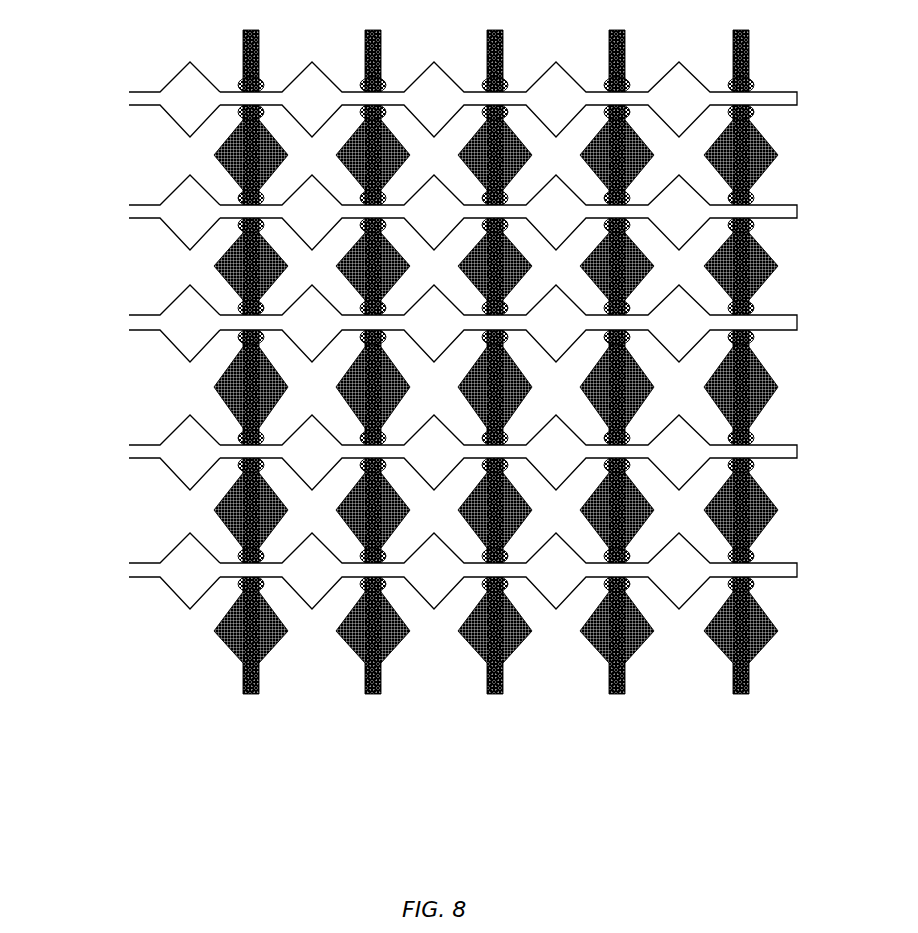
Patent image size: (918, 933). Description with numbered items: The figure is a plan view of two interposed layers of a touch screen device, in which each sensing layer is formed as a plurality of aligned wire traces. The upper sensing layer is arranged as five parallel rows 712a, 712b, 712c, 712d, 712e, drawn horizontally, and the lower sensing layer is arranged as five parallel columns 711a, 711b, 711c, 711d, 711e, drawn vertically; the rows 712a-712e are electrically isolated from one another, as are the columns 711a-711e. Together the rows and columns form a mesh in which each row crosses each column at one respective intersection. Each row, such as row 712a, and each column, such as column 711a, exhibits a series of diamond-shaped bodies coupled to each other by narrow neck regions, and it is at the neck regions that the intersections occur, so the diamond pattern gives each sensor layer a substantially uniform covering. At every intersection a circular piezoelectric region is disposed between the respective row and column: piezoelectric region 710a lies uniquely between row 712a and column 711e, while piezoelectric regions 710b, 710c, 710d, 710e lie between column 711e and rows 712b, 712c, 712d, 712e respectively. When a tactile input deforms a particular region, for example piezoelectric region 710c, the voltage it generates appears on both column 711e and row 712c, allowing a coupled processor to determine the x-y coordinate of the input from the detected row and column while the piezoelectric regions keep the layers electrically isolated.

The piezoelectric region 710a is at (447, 95).
The piezoelectric region 710b is at (447, 212).
The piezoelectric region 710c is at (447, 323).
The piezoelectric region 710d is at (451, 452).
The piezoelectric region 710e is at (451, 571).
The column 711a is at (248, 695).
The column 711b is at (373, 416).
The column 711c is at (495, 416).
The column 711d is at (617, 416).
The column 711e is at (741, 416).
The row 712a is at (120, 95).
The row 712b is at (129, 205).
The row 712c is at (129, 315).
The row 712d is at (129, 445).
The row 712e is at (129, 563).